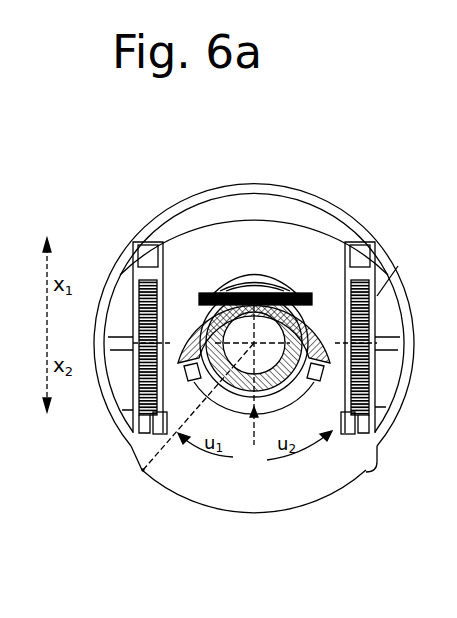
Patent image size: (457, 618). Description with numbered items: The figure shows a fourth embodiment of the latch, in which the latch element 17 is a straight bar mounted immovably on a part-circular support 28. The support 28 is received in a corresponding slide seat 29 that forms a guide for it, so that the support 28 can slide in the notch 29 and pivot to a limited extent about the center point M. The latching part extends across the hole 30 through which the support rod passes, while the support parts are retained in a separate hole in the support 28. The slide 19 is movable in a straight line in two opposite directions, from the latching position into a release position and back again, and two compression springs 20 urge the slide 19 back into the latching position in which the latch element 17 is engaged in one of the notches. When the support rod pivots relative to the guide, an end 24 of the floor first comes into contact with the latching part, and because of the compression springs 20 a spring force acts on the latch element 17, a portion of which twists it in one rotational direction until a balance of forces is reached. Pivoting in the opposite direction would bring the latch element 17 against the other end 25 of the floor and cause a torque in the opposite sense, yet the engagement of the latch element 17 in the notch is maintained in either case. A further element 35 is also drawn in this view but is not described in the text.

The latch element 17 is at (226, 266).
The slide 19 is at (300, 477).
The compression springs 20 is at (398, 266).
The end of the floor 24 is at (133, 290).
The end of the floor 25 is at (302, 377).
The part-circular support 28 is at (298, 292).
The slide seat 29 is at (138, 410).
The hole 30 is at (233, 497).
The spring tongue 35 is at (275, 284).
The center point M is at (143, 471).